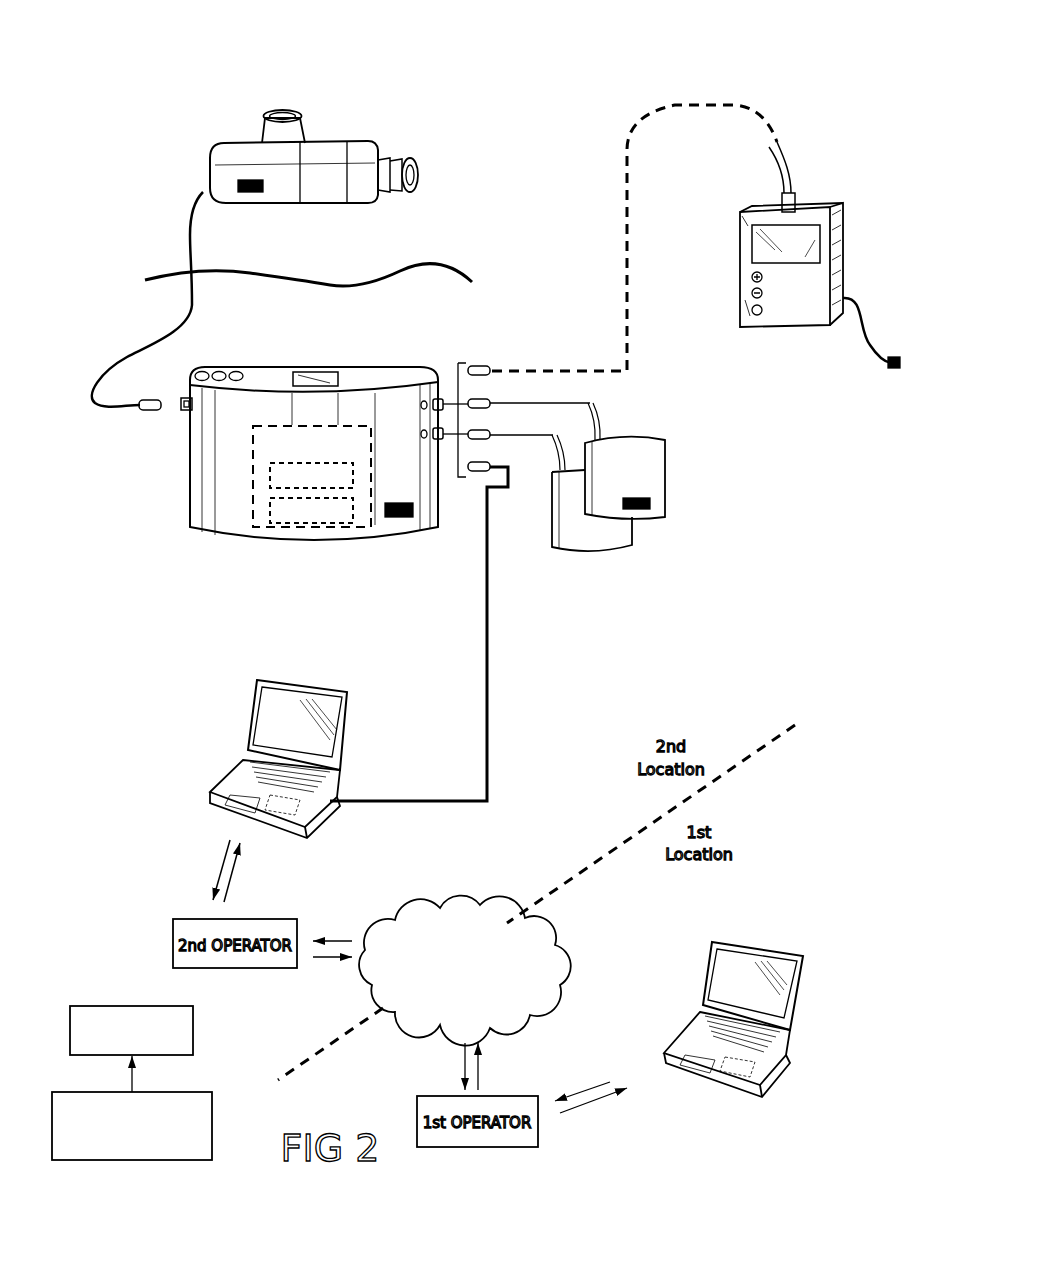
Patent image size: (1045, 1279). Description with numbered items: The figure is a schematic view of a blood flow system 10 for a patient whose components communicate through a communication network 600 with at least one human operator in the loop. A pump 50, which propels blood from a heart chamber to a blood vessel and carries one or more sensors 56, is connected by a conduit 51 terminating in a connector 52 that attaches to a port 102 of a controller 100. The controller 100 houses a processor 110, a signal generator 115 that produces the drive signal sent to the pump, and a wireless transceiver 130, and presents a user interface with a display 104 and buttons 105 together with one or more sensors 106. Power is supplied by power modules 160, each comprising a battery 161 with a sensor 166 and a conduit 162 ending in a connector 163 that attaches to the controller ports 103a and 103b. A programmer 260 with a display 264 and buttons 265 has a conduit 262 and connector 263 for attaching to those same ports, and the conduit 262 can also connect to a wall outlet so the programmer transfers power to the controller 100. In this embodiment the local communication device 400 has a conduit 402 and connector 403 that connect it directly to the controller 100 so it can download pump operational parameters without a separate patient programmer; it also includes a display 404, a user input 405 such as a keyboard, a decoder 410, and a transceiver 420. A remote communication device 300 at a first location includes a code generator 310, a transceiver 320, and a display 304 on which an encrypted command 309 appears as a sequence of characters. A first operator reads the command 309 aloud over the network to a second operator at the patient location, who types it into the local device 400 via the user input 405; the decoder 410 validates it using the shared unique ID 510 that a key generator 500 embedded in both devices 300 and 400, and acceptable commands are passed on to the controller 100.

The system 10 is at (138, 115).
The pump 50 is at (333, 155).
The conduit 51 is at (187, 247).
The connector 52 is at (138, 412).
The sensor 56 is at (258, 192).
The controller 100 is at (162, 530).
The port 102 is at (182, 408).
The port 103a is at (439, 400).
The port 103b is at (436, 430).
The display 104 is at (316, 380).
The buttons 105 is at (223, 358).
The sensor 106 is at (400, 516).
The processor 110 is at (312, 476).
The signal generator 115 is at (311, 475).
The transceiver 130 is at (311, 510).
The power module 160 is at (676, 528).
The battery 161 is at (608, 494).
The conduit 162 is at (562, 450).
The connector 163 is at (480, 435).
The sensor 166 is at (637, 506).
The programmer 260 is at (838, 182).
The conduit 262 is at (791, 160).
The connector 263 is at (481, 368).
The display 264 is at (800, 244).
The buttons 265 is at (872, 325).
The remote communication device 300 is at (788, 932).
The display 304 is at (781, 979).
The command 309 is at (729, 984).
The code generator 310 is at (688, 1051).
The transceiver 320 is at (749, 1066).
The local communication device 400 is at (193, 740).
The conduit 402 is at (488, 670).
The connector 403 is at (480, 470).
The display 404 is at (282, 712).
The user input 405 is at (230, 770).
The decoder 410 is at (228, 797).
The transceiver 420 is at (297, 812).
The key generator 500 is at (132, 1108).
The unique ID 510 is at (131, 1030).
The communication network 600 is at (465, 971).